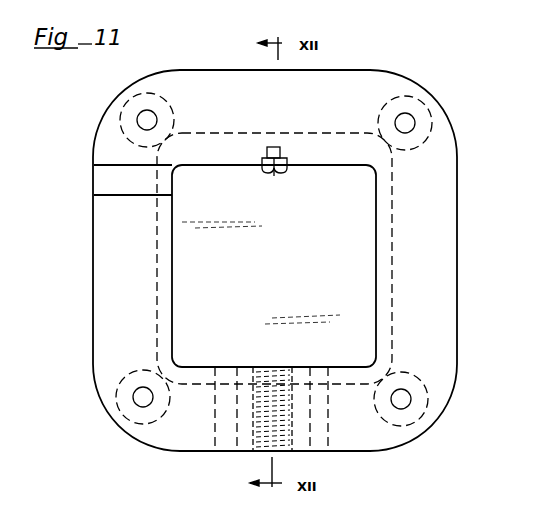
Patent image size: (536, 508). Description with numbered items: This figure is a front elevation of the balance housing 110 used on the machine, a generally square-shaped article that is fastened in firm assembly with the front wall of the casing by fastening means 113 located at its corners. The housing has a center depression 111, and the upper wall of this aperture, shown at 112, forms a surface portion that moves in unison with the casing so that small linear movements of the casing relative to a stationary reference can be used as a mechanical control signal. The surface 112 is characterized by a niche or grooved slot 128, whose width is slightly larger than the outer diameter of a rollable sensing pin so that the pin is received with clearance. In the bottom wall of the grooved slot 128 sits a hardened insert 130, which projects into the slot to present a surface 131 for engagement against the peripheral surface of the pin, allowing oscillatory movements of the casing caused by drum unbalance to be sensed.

The balance housing 110 is at (92, 290).
The center depression 111 is at (372, 238).
The upper wall of the aperture 112 is at (205, 165).
The fastening means 113 is at (418, 110).
The grooved slot 128 is at (275, 170).
The hardened insert 130 is at (275, 148).
The surface 131 is at (271, 168).